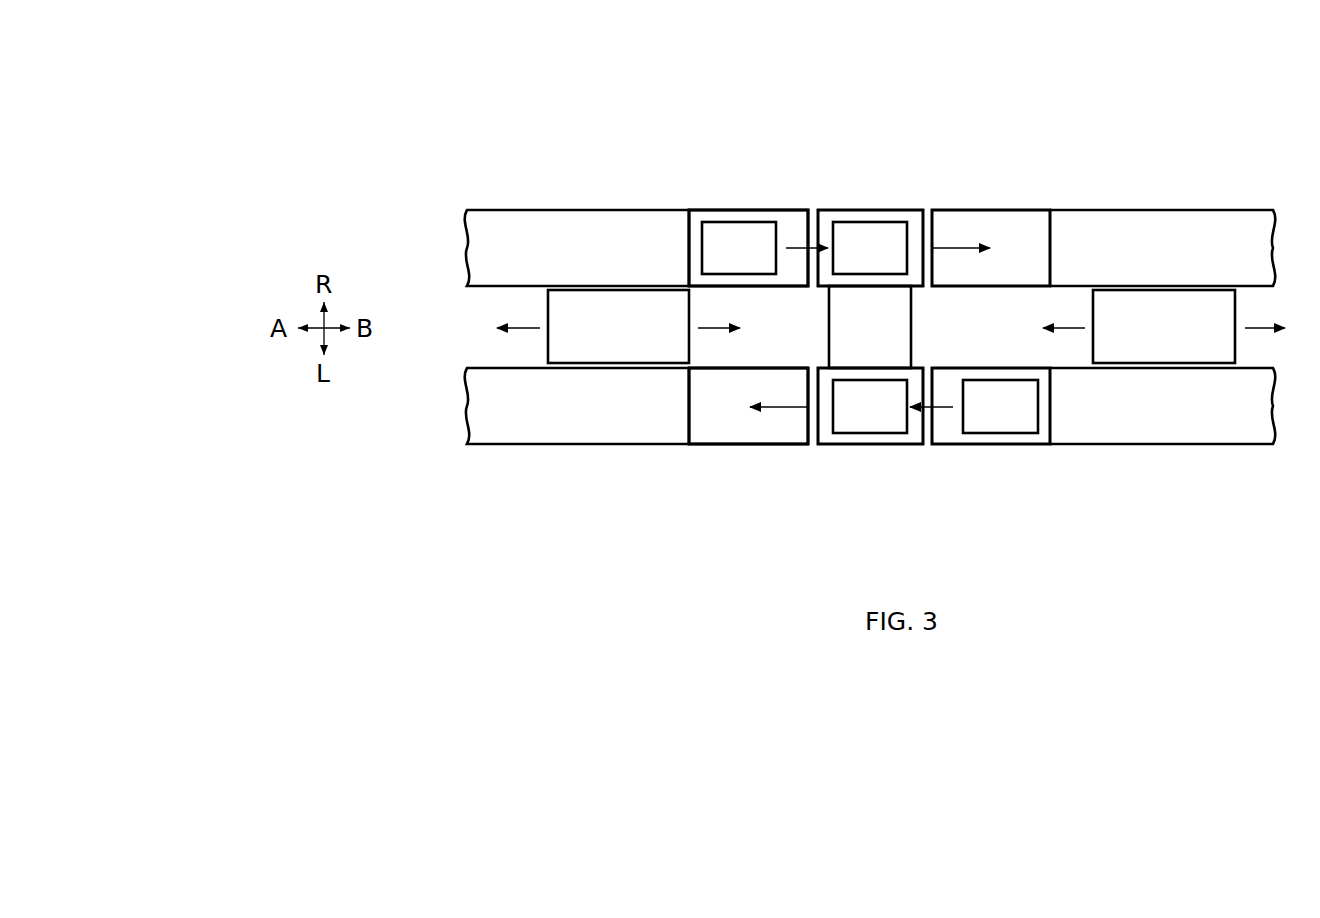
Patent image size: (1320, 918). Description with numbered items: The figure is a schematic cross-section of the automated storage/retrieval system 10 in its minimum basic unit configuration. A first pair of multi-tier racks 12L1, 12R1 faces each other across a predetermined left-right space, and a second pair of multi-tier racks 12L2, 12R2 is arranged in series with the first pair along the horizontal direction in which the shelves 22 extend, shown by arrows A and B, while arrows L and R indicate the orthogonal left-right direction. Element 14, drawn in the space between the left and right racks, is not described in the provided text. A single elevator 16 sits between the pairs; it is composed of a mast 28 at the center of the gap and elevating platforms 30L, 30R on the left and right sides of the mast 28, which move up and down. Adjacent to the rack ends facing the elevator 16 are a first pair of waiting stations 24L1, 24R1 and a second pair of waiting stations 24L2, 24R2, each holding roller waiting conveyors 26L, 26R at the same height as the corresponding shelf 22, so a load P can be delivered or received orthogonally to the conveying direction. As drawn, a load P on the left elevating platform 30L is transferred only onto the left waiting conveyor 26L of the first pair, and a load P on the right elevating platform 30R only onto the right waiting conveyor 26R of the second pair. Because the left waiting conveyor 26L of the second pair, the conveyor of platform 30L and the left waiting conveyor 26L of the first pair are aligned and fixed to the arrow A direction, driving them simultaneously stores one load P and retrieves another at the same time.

The automated storage/retrieval system 10 is at (1083, 90).
The right-side multi-tier rack of the first pair 12R1 is at (627, 202).
The right-side multi-tier rack of the second pair 12R2 is at (1115, 202).
The left-side multi-tier rack of the first pair 12L1 is at (627, 453).
The left-side multi-tier rack of the second pair 12L2 is at (1153, 453).
The transfer unit 14 is at (678, 307).
The elevator 16 is at (878, 202).
The shelves 22 is at (558, 227).
The right waiting station of the first pair 24R1 is at (745, 203).
The right waiting station of the second pair 24R2 is at (983, 203).
The left waiting station of the first pair 24L1 is at (755, 452).
The left waiting station of the second pair 24L2 is at (995, 450).
The right waiting conveyor 26R is at (785, 220).
The left waiting conveyor 26L is at (722, 435).
The mast 28 is at (897, 327).
The right elevating platform 30R is at (915, 218).
The left elevating platform 30L is at (825, 435).
The load P is at (737, 233).